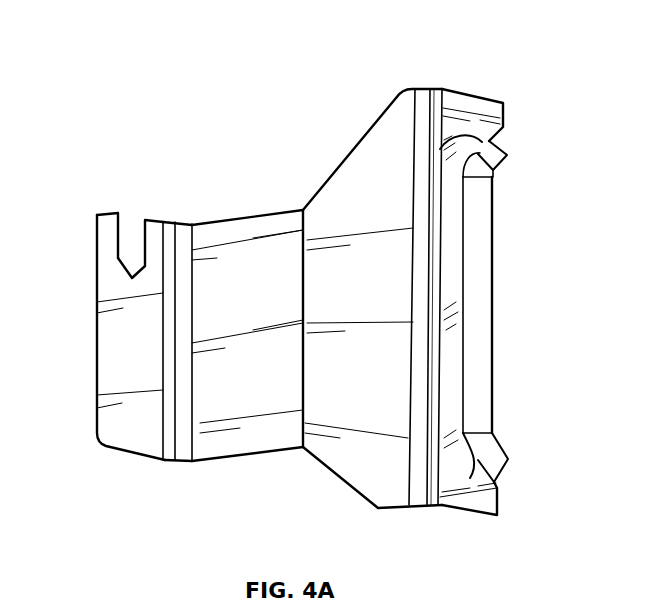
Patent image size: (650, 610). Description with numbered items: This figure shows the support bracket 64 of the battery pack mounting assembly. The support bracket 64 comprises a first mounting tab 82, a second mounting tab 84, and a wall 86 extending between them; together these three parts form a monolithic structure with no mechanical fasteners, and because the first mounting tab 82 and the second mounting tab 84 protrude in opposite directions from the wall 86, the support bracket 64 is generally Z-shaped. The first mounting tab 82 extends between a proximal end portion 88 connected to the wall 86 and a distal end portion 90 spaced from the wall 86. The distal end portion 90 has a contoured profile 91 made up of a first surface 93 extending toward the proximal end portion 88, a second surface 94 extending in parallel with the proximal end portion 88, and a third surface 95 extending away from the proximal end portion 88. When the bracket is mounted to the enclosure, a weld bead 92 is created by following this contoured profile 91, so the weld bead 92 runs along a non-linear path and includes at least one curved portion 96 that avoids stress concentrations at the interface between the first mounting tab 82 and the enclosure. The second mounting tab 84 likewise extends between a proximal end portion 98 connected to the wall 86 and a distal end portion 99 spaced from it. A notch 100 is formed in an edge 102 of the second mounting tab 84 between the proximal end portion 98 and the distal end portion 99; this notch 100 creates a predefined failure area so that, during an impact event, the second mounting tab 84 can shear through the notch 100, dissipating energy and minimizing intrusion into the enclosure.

The support bracket 64 is at (420, 84).
The first mounting tab 82 is at (471, 113).
The second mounting tab 84 is at (121, 358).
The wall 86 is at (252, 397).
The proximal end portion 88 is at (442, 87).
The distal end portion 90 is at (470, 491).
The contoured profile 91 is at (514, 128).
The weld bead 92 is at (478, 247).
The first surface 93 is at (465, 137).
The second surface 94 is at (470, 290).
The third surface 95 is at (470, 478).
The curved portion 96 is at (505, 150).
The proximal end portion 98 is at (178, 214).
The distal end portion 99 is at (110, 211).
The notch 100 is at (127, 239).
The edge 102 is at (165, 219).